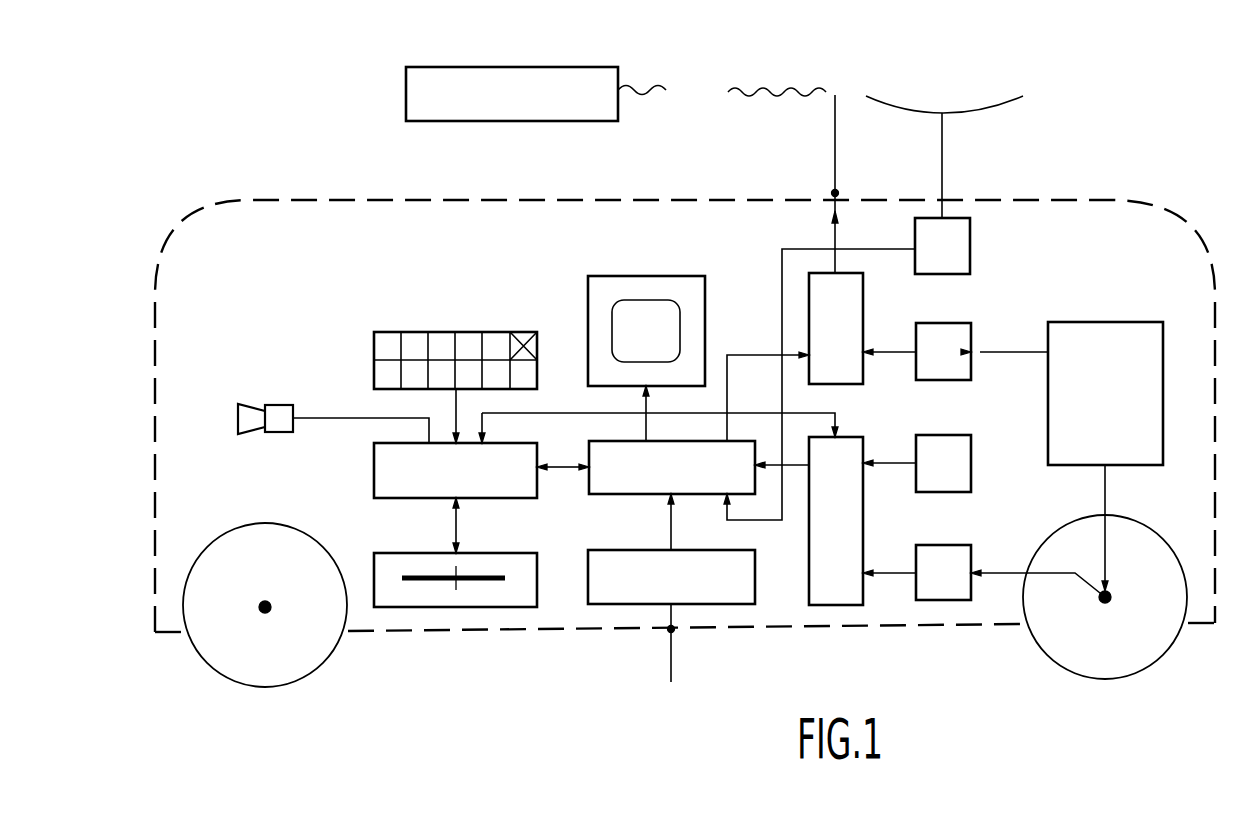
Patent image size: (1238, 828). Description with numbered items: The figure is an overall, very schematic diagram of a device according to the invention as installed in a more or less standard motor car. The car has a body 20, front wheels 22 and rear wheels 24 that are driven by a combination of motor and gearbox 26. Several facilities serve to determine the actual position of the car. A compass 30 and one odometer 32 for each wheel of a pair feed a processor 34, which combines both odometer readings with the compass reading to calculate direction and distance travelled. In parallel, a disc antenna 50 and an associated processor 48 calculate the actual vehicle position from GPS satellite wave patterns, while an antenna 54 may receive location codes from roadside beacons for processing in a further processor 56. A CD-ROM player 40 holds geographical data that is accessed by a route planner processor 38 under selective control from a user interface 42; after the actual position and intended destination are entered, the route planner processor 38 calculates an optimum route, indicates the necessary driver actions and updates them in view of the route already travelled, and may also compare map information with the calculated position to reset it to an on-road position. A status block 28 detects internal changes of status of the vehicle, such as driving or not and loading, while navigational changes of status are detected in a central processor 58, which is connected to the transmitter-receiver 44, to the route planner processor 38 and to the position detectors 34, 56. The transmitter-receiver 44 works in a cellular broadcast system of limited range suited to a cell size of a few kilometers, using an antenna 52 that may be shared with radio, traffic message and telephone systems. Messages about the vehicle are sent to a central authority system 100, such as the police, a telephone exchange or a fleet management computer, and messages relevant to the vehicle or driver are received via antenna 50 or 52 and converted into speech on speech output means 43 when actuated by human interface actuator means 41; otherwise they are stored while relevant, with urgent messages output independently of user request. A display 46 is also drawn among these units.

The central authority system 100 is at (612, 70).
The body 20 is at (592, 196).
The front wheels 22 is at (303, 680).
The rear wheels 24 is at (1058, 660).
The combination of motor and gearbox 26 is at (1135, 330).
The internal status detector 28 is at (972, 330).
The compass 30 is at (972, 448).
The odometer 32 is at (972, 558).
The processor 34 is at (832, 592).
The route planner processor 38 is at (382, 459).
The CD-ROM player 40 is at (410, 553).
The human interface actuator means 41 is at (517, 332).
The user interface 42 is at (380, 346).
The speech output means 43 is at (265, 404).
The transmitter-receiver 44 is at (858, 296).
The display 46 is at (698, 306).
The processor 48 is at (962, 234).
The disc antenna 50 is at (970, 116).
The antenna 52 is at (838, 95).
The antenna 54 is at (672, 650).
The processor 56 is at (738, 576).
The central processor 58 is at (627, 485).